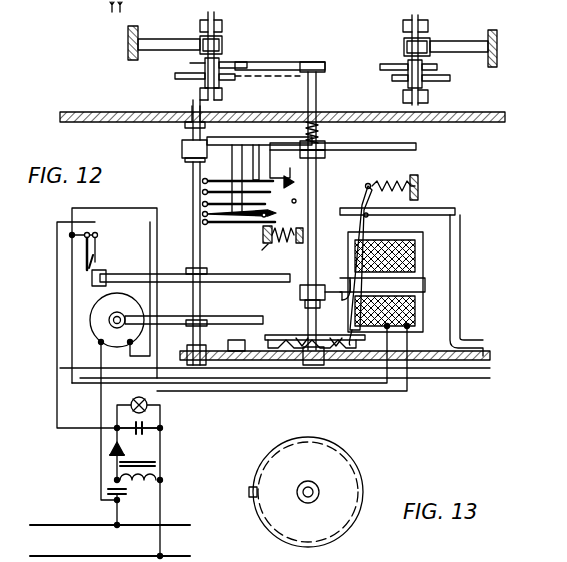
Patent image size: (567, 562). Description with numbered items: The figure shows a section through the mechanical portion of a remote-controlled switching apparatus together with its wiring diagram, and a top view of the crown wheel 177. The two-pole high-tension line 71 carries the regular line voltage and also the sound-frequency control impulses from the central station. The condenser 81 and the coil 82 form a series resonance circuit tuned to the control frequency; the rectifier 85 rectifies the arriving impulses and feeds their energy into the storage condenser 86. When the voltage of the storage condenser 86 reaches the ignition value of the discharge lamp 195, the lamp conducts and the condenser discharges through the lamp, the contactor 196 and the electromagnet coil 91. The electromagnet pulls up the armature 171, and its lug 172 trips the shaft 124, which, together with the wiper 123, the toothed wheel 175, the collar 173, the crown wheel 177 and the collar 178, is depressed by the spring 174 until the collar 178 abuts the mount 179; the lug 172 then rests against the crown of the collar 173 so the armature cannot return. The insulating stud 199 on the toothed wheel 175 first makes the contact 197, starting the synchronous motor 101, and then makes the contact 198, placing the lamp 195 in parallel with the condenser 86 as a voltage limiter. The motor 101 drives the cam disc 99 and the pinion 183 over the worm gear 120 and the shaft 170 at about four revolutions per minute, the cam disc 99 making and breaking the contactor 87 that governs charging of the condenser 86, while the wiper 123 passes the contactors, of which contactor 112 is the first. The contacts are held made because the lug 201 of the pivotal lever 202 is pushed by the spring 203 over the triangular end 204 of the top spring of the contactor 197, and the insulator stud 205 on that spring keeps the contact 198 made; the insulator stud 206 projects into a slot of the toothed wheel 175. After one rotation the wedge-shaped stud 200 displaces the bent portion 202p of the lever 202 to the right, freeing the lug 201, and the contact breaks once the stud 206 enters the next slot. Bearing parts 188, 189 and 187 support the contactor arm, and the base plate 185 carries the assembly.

In FIG. 12, the contactor 112 is at (150, 40).
In FIG. 12, the bearing block 188 is at (222, 40).
In FIG. 12, the gear arm 189 is at (190, 63).
In FIG. 12, the gear arm 187 is at (180, 79).
In FIG. 12, the wiper 123 is at (290, 64).
In FIG. 12, the pinion 183 is at (183, 150).
In FIG. 12, the shaft 170 is at (200, 298).
In FIG. 12, the insulator stud 206 is at (259, 134).
In FIG. 12, the wedge-shaped stud 200 is at (306, 142).
In FIG. 12, the spring 174 is at (322, 132).
In FIG. 12, the toothed wheel 175 is at (416, 147).
In FIG. 12, the bent portion of lever 202p is at (349, 160).
In FIG. 12, the triangular end of top spring 204 is at (290, 172).
In FIG. 12, the lug 201 is at (292, 182).
In FIG. 12, the contact 197 is at (348, 190).
In FIG. 12, the shaft 124 is at (350, 230).
In FIG. 12, the stud 199 is at (232, 180).
In FIG. 12, the insulator stud 205 is at (239, 209).
In FIG. 12, the contactor 196 is at (242, 205).
In FIG. 12, the contact 198 is at (262, 230).
In FIG. 12, the spring 203 is at (252, 256).
In FIG. 12, the pivotal lever 202 is at (288, 248).
In FIG. 12, the cam disc 99 is at (130, 275).
In FIG. 12, the synchronous motor 101 is at (92, 305).
In FIG. 12, the worm gear 120 is at (183, 310).
In FIG. 12, the collar 173 is at (300, 290).
In FIG. 12, the lug 172 is at (345, 305).
In FIG. 12, the armature 171 is at (348, 238).
In FIG. 12, the mount 179 is at (470, 360).
In FIG. 12, the electromagnet coil 91 is at (410, 332).
In FIG. 12, the collar 178 is at (318, 350).
In FIG. 12, the crown wheel 177 is at (350, 350).
In FIG. 13, the crown wheel 177 is at (364, 490).
In FIG. 12, the base plate 185 is at (240, 347).
In FIG. 13, the base plate 185 is at (250, 490).
In FIG. 12, the contactor 87 is at (96, 256).
In FIG. 12, the discharge lamp 195 is at (146, 397).
In FIG. 12, the storage condenser 86 is at (140, 433).
In FIG. 12, the rectifier 85 is at (108, 451).
In FIG. 12, the coil 82 is at (152, 474).
In FIG. 12, the condenser 81 is at (120, 494).
In FIG. 12, the two-pole high-tension line 71 is at (62, 527).